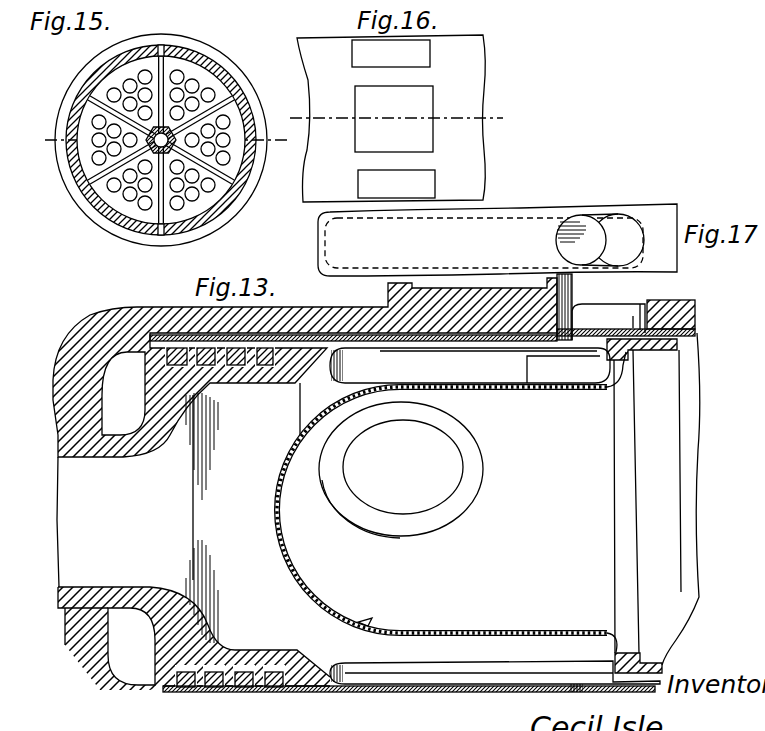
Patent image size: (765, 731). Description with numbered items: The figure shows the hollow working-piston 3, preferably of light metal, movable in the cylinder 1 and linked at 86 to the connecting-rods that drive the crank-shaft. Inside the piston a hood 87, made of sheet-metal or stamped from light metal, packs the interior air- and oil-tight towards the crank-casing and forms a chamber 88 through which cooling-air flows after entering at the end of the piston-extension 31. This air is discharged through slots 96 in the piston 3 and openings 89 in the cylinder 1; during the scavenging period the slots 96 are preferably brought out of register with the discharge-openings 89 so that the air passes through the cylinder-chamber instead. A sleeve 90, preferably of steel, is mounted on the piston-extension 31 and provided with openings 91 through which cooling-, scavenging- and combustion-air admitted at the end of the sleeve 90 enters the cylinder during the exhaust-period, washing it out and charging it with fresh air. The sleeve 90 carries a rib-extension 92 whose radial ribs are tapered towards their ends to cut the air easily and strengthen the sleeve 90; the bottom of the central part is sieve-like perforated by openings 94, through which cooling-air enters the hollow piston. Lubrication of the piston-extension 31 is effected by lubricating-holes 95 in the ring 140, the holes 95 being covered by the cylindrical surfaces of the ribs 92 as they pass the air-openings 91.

In FIG. 13, the cylinder 1 is at (117, 318).
In FIG. 13, the working-piston 3 is at (160, 646).
In FIG. 13, the piston-extension 31 is at (88, 460).
In FIG. 13, the link of connecting-rods to working-piston 86 is at (463, 466).
In FIG. 13, the hood 87 is at (406, 502).
In FIG. 13, the chamber 88 is at (258, 638).
In FIG. 17, the openings in the cylinder 89 is at (632, 256).
In FIG. 13, the openings in the cylinder 89 is at (587, 318).
In FIG. 15, the sleeve 90 is at (113, 203).
In FIG. 16, the sleeve 90 is at (463, 45).
In FIG. 16, the openings 91 is at (424, 172).
In FIG. 15, the rib-extension 92 is at (75, 105).
In FIG. 15, the openings 94 is at (197, 77).
In FIG. 15, the openings 95 is at (236, 98).
In FIG. 17, the slots 96 is at (325, 241).
In FIG. 13, the slots 96 is at (373, 357).
In FIG. 15, the ring 140 is at (205, 128).